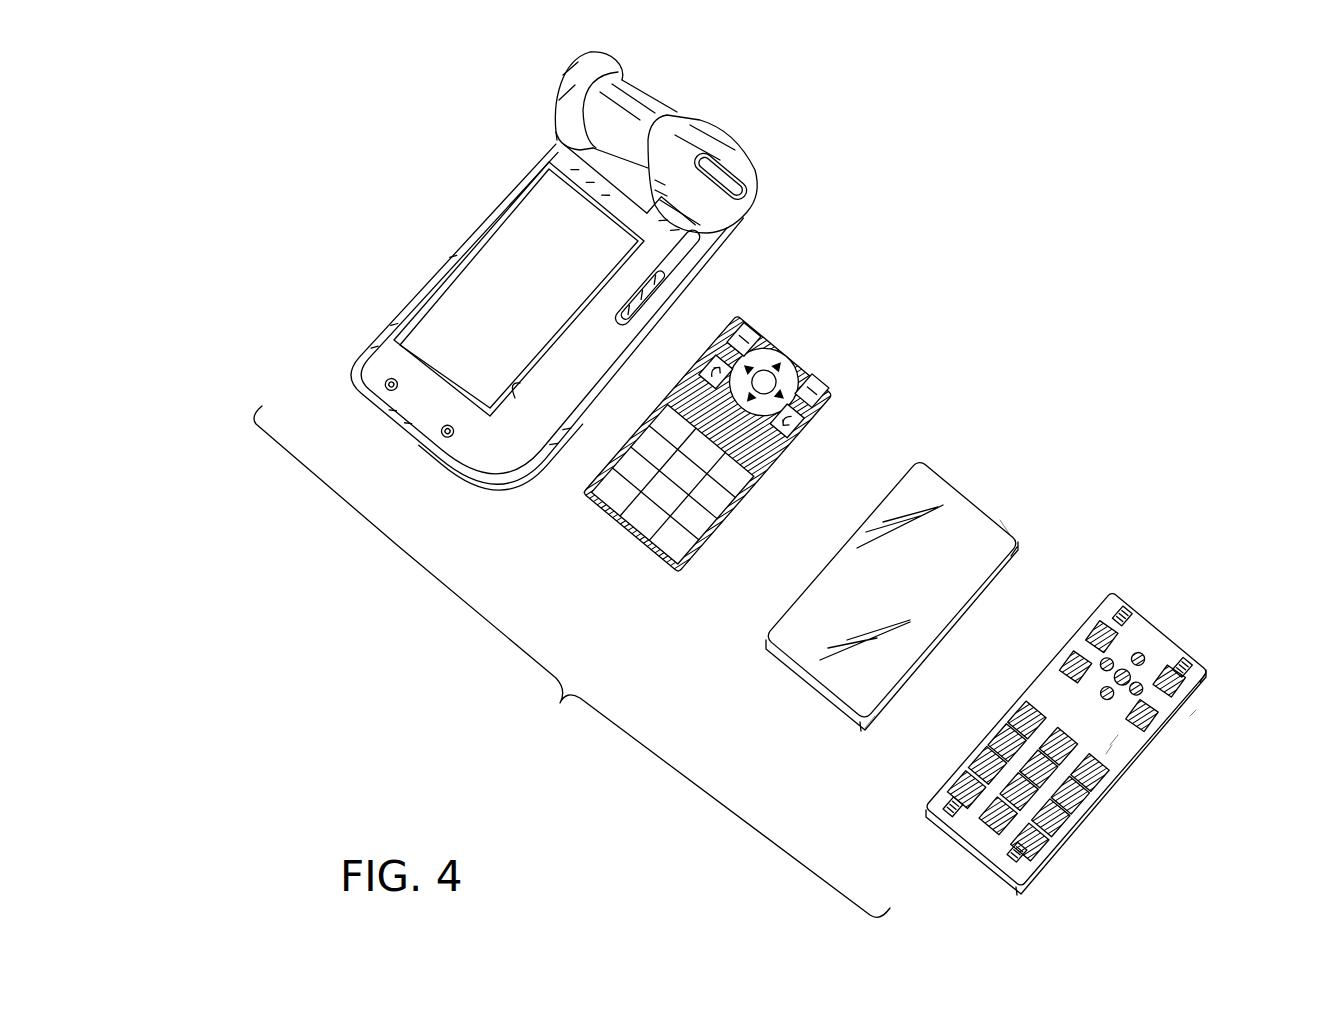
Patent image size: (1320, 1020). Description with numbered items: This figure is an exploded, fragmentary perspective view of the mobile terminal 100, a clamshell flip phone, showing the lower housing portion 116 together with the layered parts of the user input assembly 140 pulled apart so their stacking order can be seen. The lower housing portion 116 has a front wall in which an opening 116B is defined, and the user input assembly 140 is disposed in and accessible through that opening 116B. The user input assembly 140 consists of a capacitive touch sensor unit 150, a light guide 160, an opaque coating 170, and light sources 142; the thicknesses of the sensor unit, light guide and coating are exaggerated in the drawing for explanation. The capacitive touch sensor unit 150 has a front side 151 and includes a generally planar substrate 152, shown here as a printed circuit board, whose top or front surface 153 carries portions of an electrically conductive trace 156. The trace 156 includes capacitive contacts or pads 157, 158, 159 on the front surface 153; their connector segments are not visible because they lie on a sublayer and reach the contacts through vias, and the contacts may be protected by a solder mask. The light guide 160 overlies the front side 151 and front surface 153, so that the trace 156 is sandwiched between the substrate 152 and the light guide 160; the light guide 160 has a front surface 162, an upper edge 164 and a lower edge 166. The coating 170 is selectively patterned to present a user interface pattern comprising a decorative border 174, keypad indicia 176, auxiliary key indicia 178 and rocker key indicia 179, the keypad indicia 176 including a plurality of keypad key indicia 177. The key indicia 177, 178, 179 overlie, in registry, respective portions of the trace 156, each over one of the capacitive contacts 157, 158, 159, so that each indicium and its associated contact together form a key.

The mobile terminal 100 is at (1084, 198).
The lower housing portion 116 is at (410, 414).
The opening 116B is at (513, 383).
The user input assembly 140 is at (1083, 431).
The light sources 142 is at (1112, 602).
The capacitive touch sensor unit 150 is at (1235, 541).
The front side 151 is at (1049, 690).
The substrate 152 is at (1196, 710).
The front surface 153 is at (1124, 752).
The electrically conductive trace 156 is at (1112, 766).
The capacitive contacts 157 is at (983, 754).
The capacitive contacts 158 is at (1092, 628).
The capacitive contacts 159 is at (1132, 683).
The light guide 160 is at (980, 481).
The front surface 162 is at (850, 682).
The upper edge 164 is at (998, 516).
The lower edge 166 is at (780, 650).
The opaque coating 170 is at (830, 338).
The decorative border 174 is at (780, 452).
The keypad indicia 176 is at (620, 531).
The keypad key indicia 177 is at (703, 545).
The auxiliary key indicia 178 is at (797, 438).
The rocker key indicia 179 is at (775, 352).